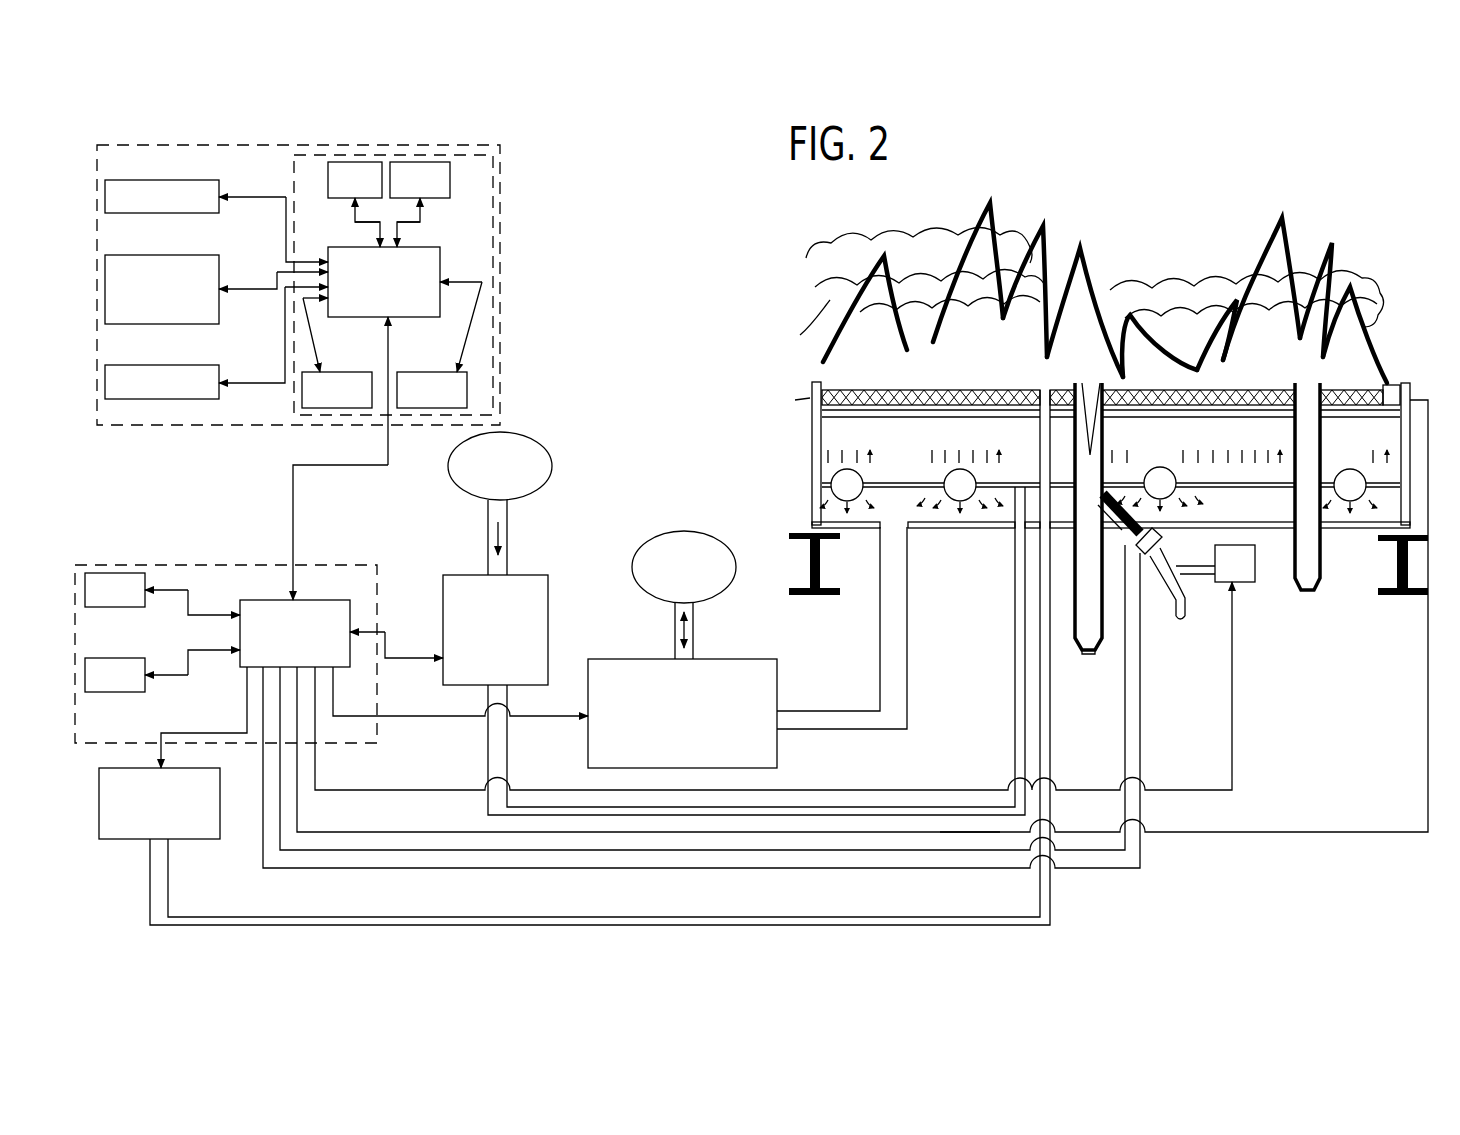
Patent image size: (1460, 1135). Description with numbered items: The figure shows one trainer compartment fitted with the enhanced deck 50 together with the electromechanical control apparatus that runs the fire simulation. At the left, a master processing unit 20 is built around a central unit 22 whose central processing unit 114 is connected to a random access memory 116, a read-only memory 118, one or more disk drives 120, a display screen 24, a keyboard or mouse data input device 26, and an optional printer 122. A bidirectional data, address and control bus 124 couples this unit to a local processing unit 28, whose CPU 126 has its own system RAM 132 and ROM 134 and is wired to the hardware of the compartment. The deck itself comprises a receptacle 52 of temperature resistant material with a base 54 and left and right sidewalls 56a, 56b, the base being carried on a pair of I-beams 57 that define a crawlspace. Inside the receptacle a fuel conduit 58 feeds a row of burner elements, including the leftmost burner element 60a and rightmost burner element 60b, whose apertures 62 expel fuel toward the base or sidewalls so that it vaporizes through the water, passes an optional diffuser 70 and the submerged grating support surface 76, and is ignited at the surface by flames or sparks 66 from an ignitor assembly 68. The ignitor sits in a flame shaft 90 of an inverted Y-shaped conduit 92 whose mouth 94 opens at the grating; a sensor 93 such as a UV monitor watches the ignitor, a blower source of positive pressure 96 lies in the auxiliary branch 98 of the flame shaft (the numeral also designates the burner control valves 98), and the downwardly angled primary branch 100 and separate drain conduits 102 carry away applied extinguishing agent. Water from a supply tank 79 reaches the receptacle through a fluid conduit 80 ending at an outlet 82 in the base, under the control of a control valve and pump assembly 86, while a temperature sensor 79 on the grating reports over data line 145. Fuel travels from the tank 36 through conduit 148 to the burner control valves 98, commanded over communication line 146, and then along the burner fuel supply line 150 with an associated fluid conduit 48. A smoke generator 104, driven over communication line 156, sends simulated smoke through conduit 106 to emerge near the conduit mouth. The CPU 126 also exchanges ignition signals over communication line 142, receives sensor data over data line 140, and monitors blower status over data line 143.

The master processing unit 20 is at (517, 185).
The central unit 22 is at (496, 262).
The display screen 24 is at (222, 270).
The data input device 26 is at (158, 180).
The local automated processing unit 28 is at (167, 552).
The fuel tank 36 is at (550, 456).
The fluid conduit 48 is at (1197, 567).
The enhanced deck 50 is at (752, 385).
The receptacle 52 is at (1087, 505).
The base 54 is at (962, 530).
The left receptacle sidewall 56a is at (812, 448).
The right receptacle sidewall 56b is at (1412, 440).
The I-beams 57 is at (812, 596).
The conduit 58 is at (900, 480).
The leftmost burner element 60a is at (832, 483).
The rightmost burner element 60b is at (1345, 469).
The apertures 62 is at (850, 505).
The flames or sparks 66 is at (1085, 445).
The ignitor assembly 68 is at (1143, 553).
The diffuser 70 is at (828, 417).
The support surface 76 is at (838, 390).
The temperature sensor 79 is at (700, 533).
The fluid conduit 80 is at (880, 676).
The outlet 82 is at (895, 532).
The control valve and pump assembly 86 is at (777, 752).
The flame shaft 90 is at (1113, 507).
The conduit 92 is at (1107, 438).
The sensor 93 is at (1127, 532).
The conduit mouth 94 is at (1088, 388).
The source of positive pressure 96 is at (1255, 568).
The burner control valves 98 is at (548, 612).
The primary branch 100 is at (1178, 618).
The drain conduits 102 is at (1320, 562).
The smoke generator 104 is at (99, 796).
The conduit 106 is at (150, 893).
The central processing unit 114 is at (441, 303).
The random access memory 116 is at (420, 162).
The read-only memory 118 is at (358, 162).
The disk drives 120 is at (302, 391).
The printer 122 is at (192, 365).
The bus 124 is at (325, 466).
The CPU 126 is at (325, 600).
The system RAM 132 is at (118, 660).
The ROM 134 is at (125, 573).
The data line 140 is at (803, 852).
The communication line 142 is at (870, 870).
The data line 143 is at (975, 790).
The data line 145 is at (950, 834).
The communication line 146 is at (385, 640).
The conduit 148 is at (507, 550).
The burner fuel supply line 150 is at (1017, 638).
The communication line 156 is at (178, 733).